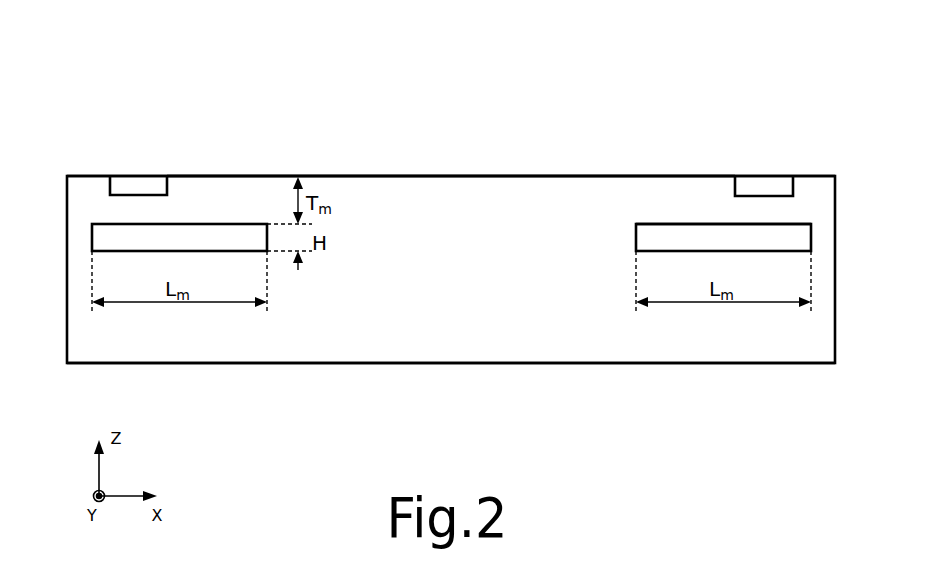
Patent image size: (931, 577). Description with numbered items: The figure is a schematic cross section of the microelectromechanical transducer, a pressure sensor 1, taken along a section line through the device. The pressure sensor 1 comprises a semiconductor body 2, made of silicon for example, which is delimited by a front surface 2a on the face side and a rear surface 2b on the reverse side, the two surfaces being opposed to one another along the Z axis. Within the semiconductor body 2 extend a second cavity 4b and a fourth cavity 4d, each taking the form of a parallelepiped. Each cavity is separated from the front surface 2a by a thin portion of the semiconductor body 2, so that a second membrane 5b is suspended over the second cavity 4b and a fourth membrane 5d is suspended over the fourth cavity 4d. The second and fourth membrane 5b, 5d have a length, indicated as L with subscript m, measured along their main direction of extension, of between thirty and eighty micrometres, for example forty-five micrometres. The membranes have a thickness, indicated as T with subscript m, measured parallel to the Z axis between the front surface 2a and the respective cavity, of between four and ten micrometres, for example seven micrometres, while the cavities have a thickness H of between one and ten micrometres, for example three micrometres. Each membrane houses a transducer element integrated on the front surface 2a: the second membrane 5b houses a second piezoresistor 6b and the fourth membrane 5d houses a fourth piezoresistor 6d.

The pressure sensor 1 is at (162, 56).
The semiconductor body 2 is at (77, 354).
The front surface 2a is at (366, 166).
The rear surface 2b is at (282, 374).
The fourth cavity 4d is at (100, 238).
The second cavity 4b is at (794, 232).
The fourth membrane 5d is at (227, 205).
The second membrane 5b is at (666, 205).
The fourth piezoresistor 6d is at (130, 188).
The second piezoresistor 6b is at (754, 185).